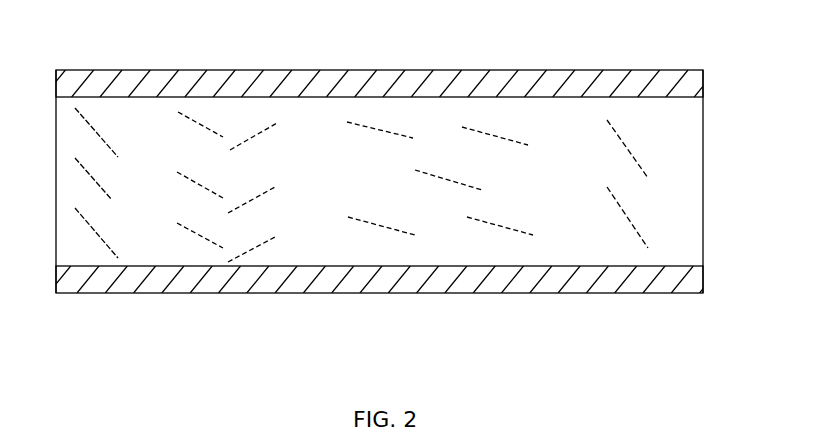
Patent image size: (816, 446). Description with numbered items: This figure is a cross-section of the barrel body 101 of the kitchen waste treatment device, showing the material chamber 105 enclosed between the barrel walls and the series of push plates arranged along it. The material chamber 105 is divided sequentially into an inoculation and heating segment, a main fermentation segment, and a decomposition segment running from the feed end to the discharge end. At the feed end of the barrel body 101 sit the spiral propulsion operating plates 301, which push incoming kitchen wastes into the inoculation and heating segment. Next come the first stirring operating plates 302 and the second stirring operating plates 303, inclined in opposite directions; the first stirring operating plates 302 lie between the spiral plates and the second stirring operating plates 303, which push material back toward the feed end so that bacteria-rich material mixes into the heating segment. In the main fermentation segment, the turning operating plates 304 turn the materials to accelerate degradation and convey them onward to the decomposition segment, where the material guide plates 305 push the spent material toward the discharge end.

The barrel body 101 is at (81, 70).
The material chamber 105 is at (327, 245).
The spiral propulsion operating plates 301 is at (97, 133).
The first stirring operating plates 302 is at (201, 130).
The second stirring operating plates 303 is at (260, 133).
The turning operating plates 304 is at (497, 136).
The material guide plates 305 is at (628, 150).